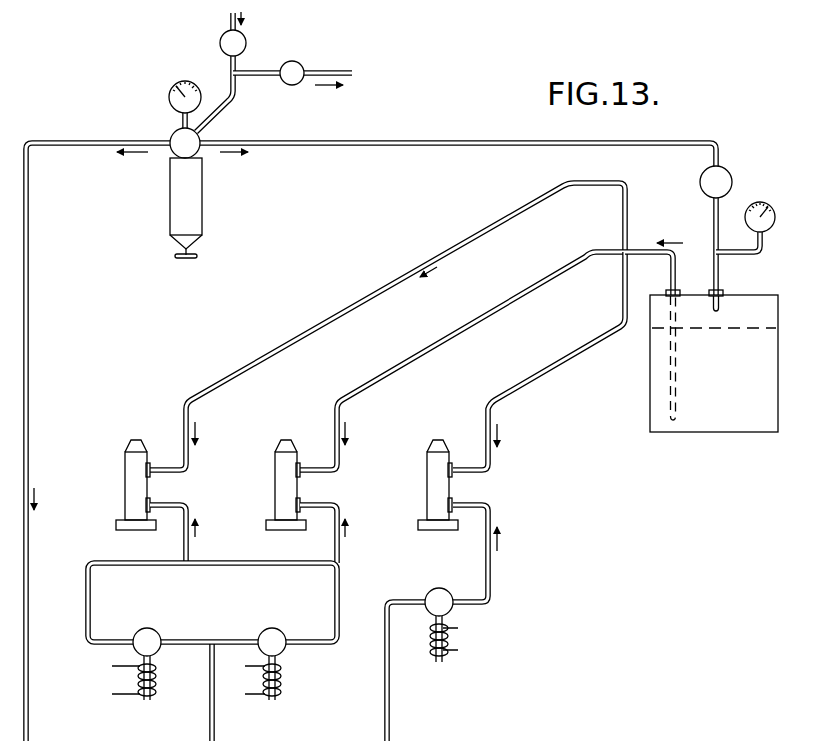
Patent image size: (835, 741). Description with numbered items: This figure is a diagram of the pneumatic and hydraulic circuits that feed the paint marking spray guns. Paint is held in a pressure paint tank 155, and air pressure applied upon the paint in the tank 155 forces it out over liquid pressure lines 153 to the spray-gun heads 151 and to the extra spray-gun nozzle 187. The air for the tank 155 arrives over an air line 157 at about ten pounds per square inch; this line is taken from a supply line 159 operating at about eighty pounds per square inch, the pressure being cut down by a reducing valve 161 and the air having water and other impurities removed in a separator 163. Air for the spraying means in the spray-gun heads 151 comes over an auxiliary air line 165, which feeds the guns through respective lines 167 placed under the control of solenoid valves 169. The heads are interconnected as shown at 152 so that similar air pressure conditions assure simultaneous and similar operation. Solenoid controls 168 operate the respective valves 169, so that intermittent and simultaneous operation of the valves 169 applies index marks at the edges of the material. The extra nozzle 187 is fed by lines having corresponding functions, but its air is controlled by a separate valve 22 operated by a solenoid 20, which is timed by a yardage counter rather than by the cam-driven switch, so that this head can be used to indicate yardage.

The solenoid 20 is at (452, 650).
The valve 22 is at (444, 592).
The spray-gun head 151 is at (130, 487).
The interconnection 152 is at (268, 562).
The liquid pressure line 153 is at (560, 268).
The pressure paint tank 155 is at (705, 418).
The air line 157 is at (428, 141).
The supply line 159 is at (230, 23).
The reducing valve 161 is at (200, 151).
The separator 163 is at (193, 220).
The auxiliary air line 165 is at (73, 148).
The line 167 is at (168, 508).
The solenoid control 168 is at (153, 684).
The solenoid valve 169 is at (162, 618).
The spray-gun nozzle 187 is at (432, 507).